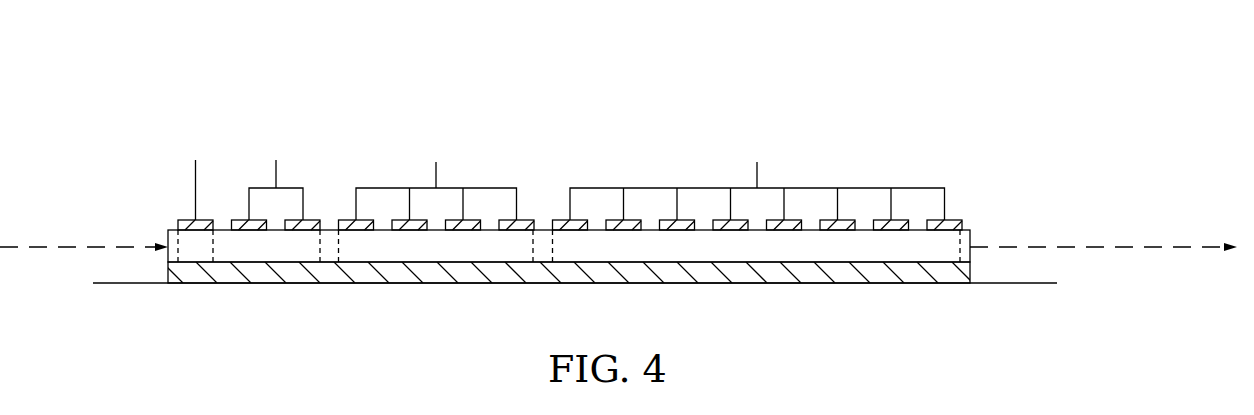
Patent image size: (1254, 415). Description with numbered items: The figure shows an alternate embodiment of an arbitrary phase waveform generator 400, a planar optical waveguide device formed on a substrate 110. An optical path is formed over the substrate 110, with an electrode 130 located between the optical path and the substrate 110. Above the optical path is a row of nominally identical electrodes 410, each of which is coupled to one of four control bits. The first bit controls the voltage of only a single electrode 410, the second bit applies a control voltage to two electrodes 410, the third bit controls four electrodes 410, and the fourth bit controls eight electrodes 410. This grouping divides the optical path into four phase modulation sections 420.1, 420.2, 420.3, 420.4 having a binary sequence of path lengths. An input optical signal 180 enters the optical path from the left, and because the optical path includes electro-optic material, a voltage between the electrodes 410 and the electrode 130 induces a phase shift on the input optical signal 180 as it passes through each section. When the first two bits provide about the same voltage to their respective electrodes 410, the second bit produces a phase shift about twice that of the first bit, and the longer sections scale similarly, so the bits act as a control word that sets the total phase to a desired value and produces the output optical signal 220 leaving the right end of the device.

The arbitrary phase waveform generator 400 is at (110, 74).
The electrodes 410 is at (178, 220).
The input optical signal 180 is at (72, 248).
The output optical signal 220 is at (1105, 248).
The substrate 110 is at (117, 284).
The electrode 130 is at (907, 275).
The phase modulation section 420.1 is at (190, 252).
The phase modulation section 420.2 is at (282, 252).
The phase modulation section 420.3 is at (422, 252).
The phase modulation section 420.4 is at (770, 252).